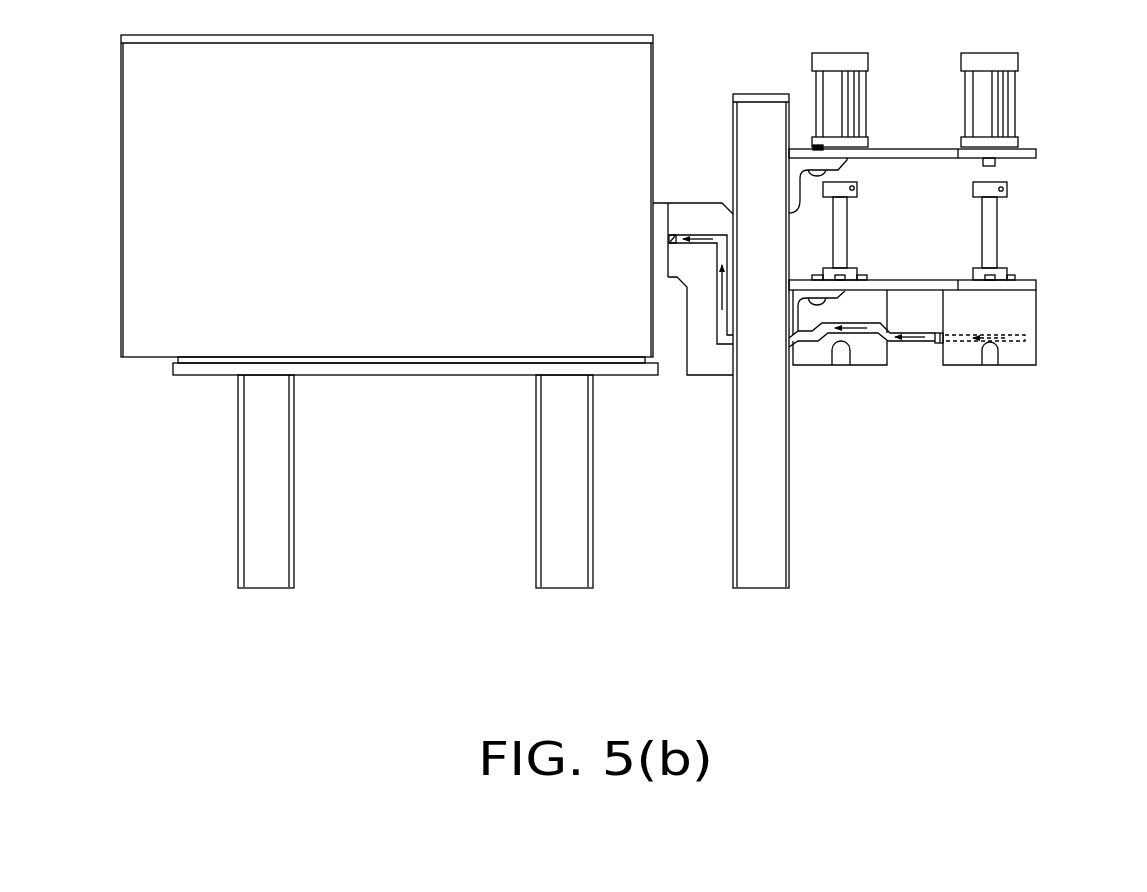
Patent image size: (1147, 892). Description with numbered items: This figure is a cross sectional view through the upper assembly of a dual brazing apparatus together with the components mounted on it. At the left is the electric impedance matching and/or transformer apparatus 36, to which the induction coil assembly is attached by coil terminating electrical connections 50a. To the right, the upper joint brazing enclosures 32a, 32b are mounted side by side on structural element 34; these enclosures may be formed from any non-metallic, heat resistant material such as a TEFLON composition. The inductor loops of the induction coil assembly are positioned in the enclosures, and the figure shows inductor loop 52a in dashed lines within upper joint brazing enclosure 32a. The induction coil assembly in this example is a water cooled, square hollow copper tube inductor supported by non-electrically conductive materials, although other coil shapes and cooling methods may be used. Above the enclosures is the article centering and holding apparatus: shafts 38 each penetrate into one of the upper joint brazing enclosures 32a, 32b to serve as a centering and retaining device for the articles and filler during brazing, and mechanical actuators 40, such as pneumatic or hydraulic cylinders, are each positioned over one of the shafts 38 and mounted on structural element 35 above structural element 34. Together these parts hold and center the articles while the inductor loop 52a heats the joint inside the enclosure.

The electric impedance matching and/or transformer apparatus 36 is at (418, 211).
The coil terminating electrical connections 50a is at (692, 220).
The structural element 35 is at (1036, 153).
The mechanical actuators 40 is at (837, 104).
The shafts 38 is at (840, 235).
The structural element 34 is at (1036, 282).
The upper joint brazing enclosure 32a is at (1034, 302).
The upper joint brazing enclosure 32b is at (873, 357).
The inductor loop 52a is at (962, 352).